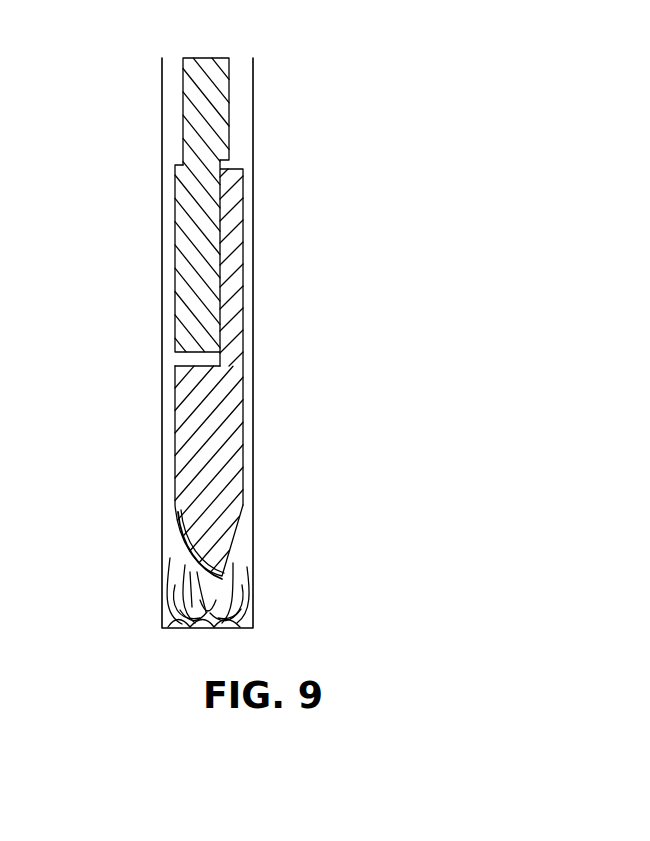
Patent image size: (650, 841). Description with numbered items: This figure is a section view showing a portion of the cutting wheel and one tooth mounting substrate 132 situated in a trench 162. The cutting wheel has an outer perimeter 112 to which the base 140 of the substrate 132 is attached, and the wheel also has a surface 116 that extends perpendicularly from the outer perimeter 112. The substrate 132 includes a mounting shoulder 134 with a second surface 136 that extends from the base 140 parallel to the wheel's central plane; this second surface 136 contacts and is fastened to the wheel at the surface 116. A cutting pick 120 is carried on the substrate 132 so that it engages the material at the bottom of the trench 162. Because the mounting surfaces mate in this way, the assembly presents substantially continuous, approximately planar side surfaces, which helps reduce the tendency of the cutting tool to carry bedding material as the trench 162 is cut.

The outer perimeter 112 is at (175, 353).
The surface 116 is at (224, 233).
The picks 120 is at (247, 597).
The mounting substrate 132 is at (235, 440).
The mounting shoulder 134 is at (219, 97).
The second surface 136 is at (218, 280).
The base 140 is at (203, 362).
The trench 162 is at (178, 524).